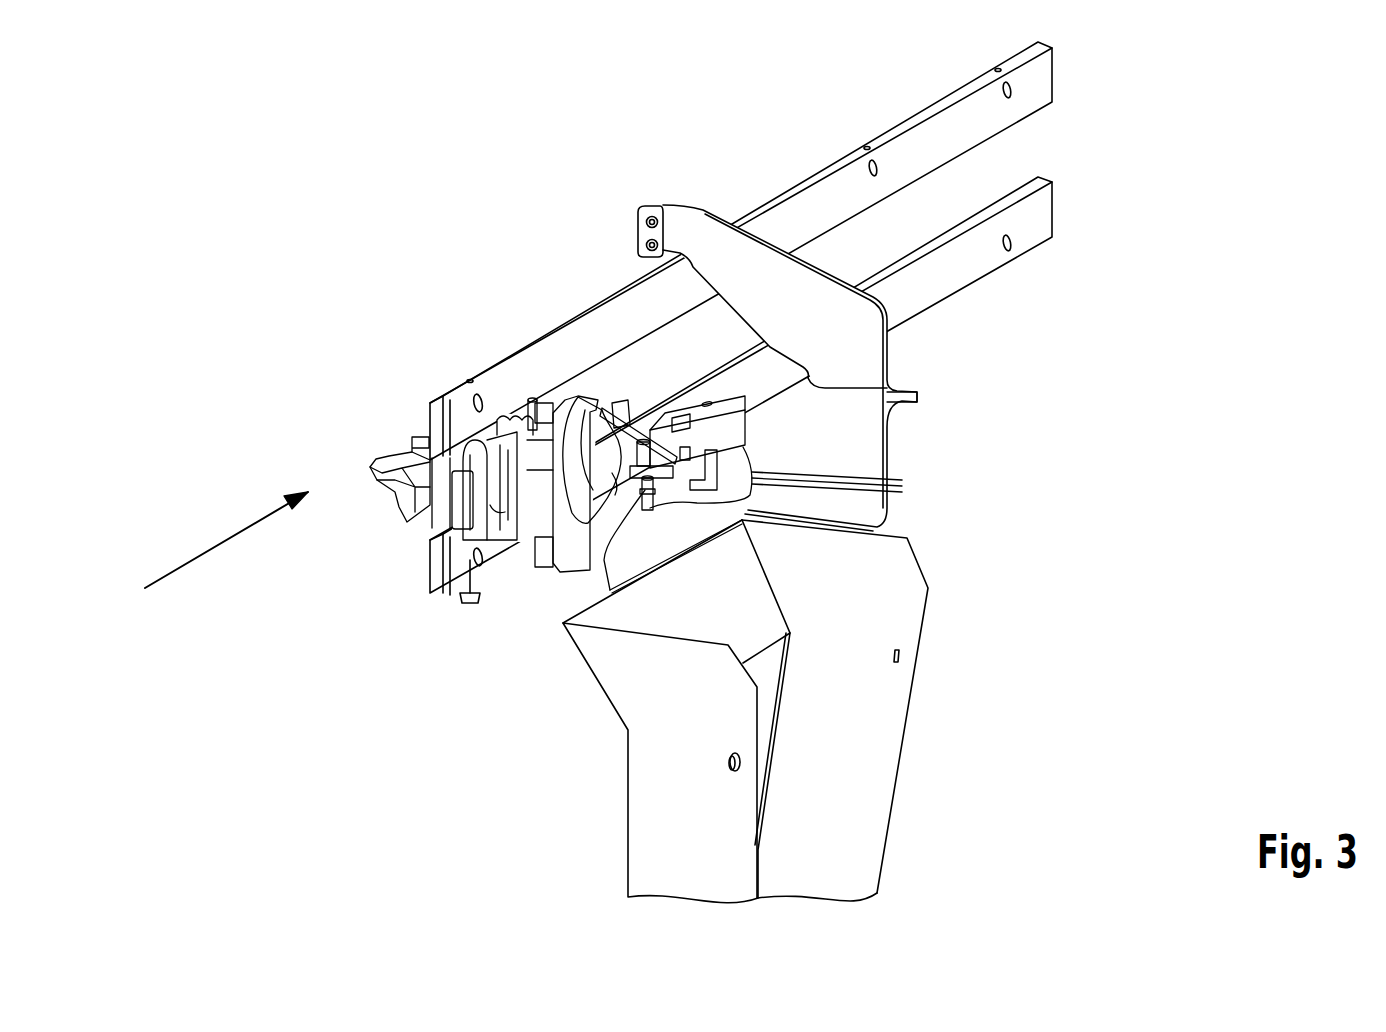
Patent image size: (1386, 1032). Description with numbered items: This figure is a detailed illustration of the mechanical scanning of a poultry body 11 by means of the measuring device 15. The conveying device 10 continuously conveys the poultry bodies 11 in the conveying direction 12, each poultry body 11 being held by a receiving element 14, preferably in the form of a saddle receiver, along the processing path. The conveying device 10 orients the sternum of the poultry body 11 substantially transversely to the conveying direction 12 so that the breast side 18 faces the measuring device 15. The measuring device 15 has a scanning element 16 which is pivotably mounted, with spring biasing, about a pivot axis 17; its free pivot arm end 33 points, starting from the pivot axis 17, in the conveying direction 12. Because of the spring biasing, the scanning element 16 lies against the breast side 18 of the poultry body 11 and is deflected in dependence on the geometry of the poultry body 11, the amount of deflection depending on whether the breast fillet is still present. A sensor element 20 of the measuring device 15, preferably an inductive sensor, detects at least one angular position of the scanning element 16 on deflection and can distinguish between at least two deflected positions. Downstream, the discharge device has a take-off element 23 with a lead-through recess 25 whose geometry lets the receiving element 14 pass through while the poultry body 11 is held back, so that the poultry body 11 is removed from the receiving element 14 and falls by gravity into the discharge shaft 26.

The conveying device 10 is at (430, 362).
The poultry body 11 is at (572, 432).
The conveying direction 12 is at (220, 540).
The receiving element 14 is at (506, 432).
The measuring device 15 is at (733, 458).
The scanning element 16 is at (643, 432).
The pivot axis 17 is at (652, 440).
The breast side 18 is at (594, 453).
The sensor element 20 is at (650, 501).
The take-off element 23 is at (898, 400).
The lead-through recess 25 is at (860, 385).
The discharge shaft 26 is at (870, 730).
The free pivot arm end 33 is at (620, 422).